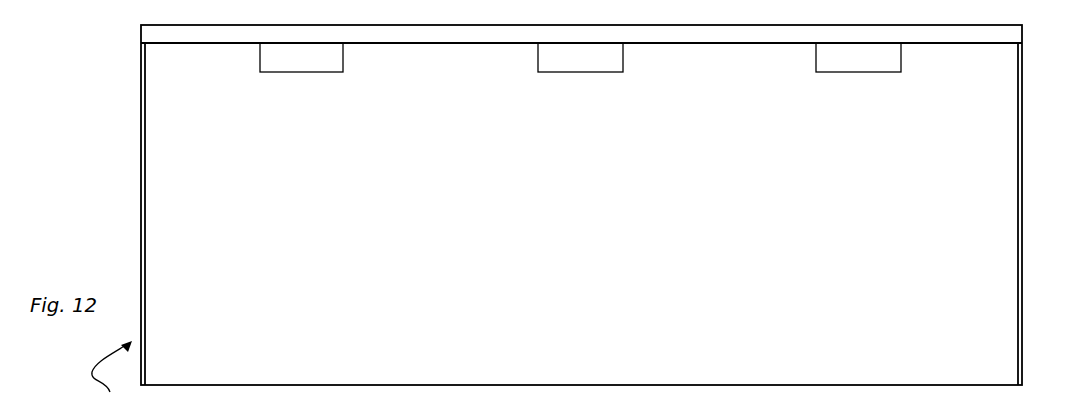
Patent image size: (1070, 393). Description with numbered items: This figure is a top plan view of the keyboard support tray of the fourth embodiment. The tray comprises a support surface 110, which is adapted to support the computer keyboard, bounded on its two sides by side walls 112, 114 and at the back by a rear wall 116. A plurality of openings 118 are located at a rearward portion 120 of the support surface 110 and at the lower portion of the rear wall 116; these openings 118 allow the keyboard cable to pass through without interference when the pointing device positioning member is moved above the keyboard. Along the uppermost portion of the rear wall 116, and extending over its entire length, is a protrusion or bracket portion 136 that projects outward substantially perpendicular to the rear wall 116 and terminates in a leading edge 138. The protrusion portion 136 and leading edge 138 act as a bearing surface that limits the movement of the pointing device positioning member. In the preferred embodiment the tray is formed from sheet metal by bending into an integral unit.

The support surface 110 is at (793, 267).
The side wall 112 is at (145, 235).
The side wall 114 is at (1018, 243).
The rear wall 116 is at (505, 44).
The openings 118 is at (296, 63).
The rearward portion 120 is at (458, 58).
The protrusion or bracket portion 136 is at (188, 33).
The leading edge 138 is at (335, 3).